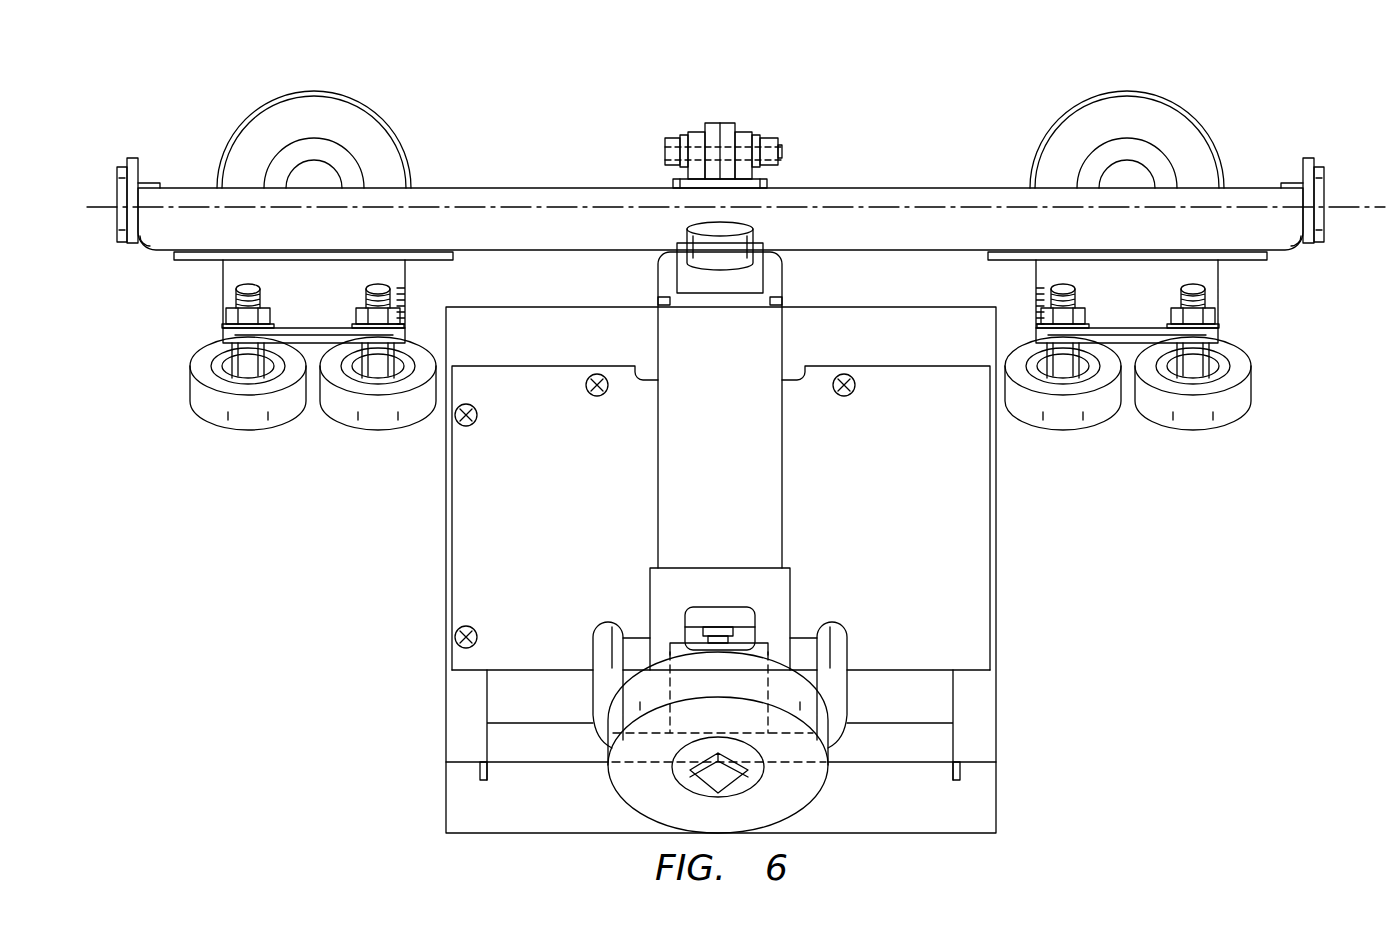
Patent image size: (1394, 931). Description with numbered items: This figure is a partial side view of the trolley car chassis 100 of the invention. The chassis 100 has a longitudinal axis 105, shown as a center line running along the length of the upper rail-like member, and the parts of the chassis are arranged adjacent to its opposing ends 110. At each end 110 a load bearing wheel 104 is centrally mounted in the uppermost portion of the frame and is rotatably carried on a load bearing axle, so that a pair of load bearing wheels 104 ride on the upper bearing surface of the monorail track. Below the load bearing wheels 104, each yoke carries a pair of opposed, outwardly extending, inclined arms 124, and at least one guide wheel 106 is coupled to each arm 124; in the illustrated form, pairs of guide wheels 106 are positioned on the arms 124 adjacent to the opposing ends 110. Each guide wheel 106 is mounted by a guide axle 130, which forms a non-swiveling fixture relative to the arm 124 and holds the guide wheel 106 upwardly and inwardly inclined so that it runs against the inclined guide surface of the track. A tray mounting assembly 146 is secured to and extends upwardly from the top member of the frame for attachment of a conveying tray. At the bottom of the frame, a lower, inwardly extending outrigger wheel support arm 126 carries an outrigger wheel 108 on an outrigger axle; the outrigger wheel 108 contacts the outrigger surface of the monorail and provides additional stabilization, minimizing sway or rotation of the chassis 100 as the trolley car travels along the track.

The trolley car chassis 100 is at (470, 116).
The load bearing wheel 104 is at (253, 123).
The longitudinal axis 105 is at (1337, 211).
The guide wheel 106 is at (250, 428).
The outrigger wheel 108 is at (825, 783).
The opposing end 110 is at (117, 176).
The inclined arm 124 is at (220, 267).
The outrigger wheel support arm 126 is at (791, 593).
The guide axle 130 is at (256, 286).
The tray mounting assembly 146 is at (743, 131).